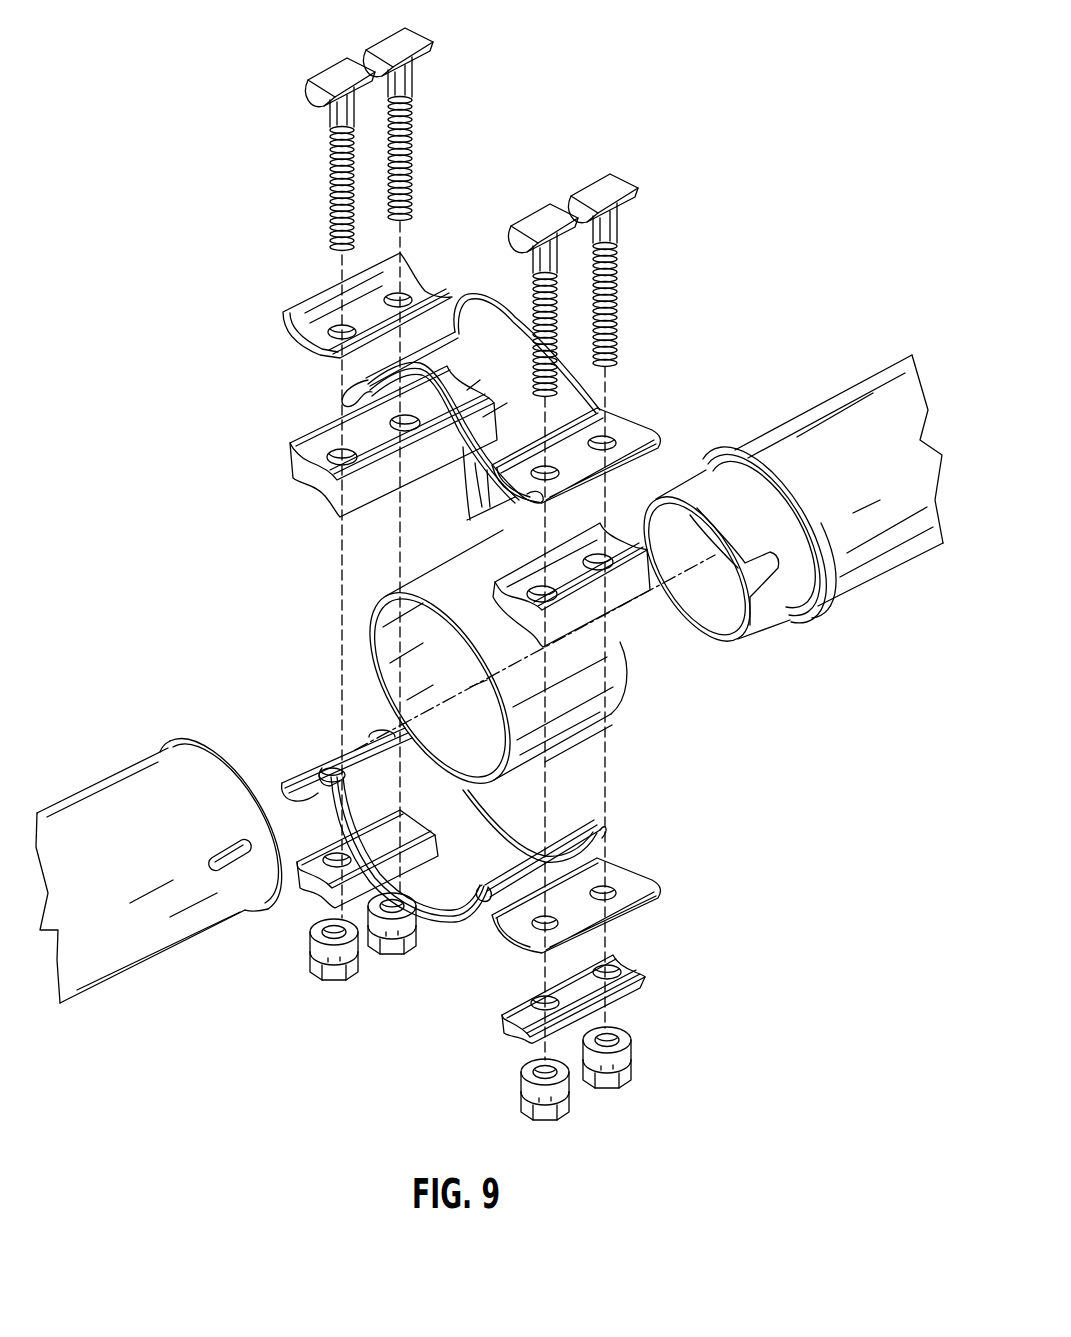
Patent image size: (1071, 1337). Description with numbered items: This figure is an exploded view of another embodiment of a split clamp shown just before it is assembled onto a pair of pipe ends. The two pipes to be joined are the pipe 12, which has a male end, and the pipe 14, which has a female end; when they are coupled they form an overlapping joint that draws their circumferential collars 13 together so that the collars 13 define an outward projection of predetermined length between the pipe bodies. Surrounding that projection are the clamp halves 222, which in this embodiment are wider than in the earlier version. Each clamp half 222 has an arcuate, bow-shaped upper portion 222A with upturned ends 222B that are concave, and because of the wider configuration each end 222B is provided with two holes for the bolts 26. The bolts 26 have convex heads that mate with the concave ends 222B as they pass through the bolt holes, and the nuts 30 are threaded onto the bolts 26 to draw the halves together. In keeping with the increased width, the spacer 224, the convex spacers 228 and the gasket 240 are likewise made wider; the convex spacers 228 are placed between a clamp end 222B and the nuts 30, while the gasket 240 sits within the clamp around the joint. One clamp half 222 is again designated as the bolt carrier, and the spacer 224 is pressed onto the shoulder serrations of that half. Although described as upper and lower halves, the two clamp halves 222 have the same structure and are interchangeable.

The pipe 12 is at (880, 490).
The circumferential collar 13 is at (720, 455).
The pipe 14 is at (182, 864).
The bolt 26 is at (616, 190).
The nut 30 is at (632, 1053).
The clamp half 222 is at (445, 544).
The upper portion 222A is at (340, 376).
The upturned end 222B is at (418, 270).
The spacer 224 is at (310, 493).
The convex spacer 228 is at (640, 968).
The gasket 240 is at (488, 746).